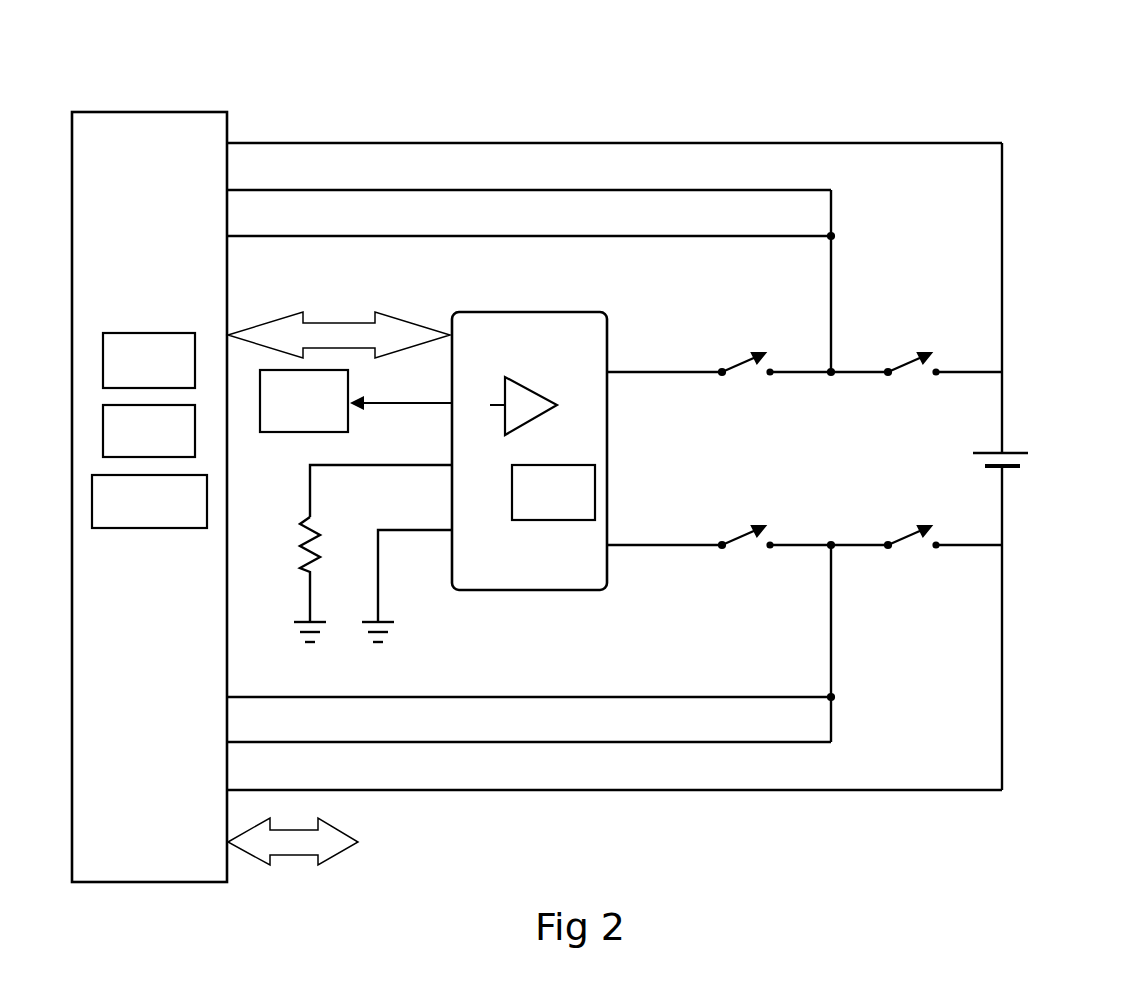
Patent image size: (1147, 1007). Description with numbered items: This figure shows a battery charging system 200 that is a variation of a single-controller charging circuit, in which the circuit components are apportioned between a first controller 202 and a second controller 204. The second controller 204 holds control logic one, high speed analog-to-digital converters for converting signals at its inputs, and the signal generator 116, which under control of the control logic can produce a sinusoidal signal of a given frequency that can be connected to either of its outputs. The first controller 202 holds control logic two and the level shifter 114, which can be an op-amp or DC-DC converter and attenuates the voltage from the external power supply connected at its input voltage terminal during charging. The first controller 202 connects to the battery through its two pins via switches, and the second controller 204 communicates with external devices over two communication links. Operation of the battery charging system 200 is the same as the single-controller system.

The battery charging system 200 is at (996, 86).
The second controller 204 is at (190, 112).
The first controller 202 is at (568, 308).
The level shifter 114 is at (540, 407).
The signal generator 116 is at (150, 528).